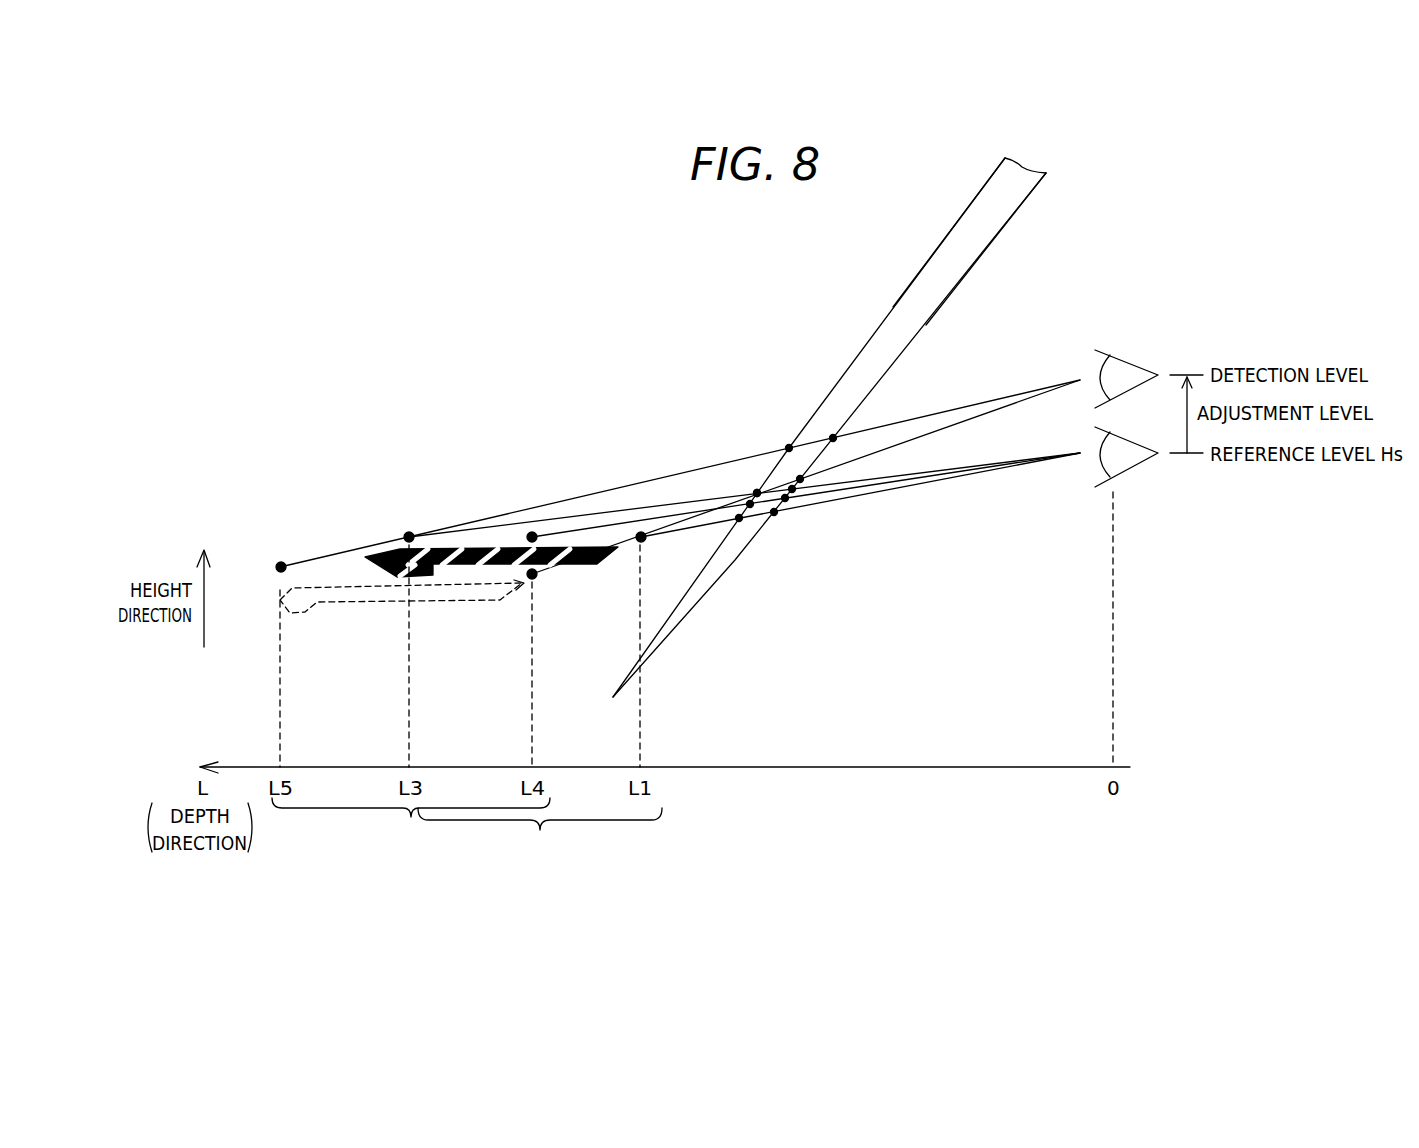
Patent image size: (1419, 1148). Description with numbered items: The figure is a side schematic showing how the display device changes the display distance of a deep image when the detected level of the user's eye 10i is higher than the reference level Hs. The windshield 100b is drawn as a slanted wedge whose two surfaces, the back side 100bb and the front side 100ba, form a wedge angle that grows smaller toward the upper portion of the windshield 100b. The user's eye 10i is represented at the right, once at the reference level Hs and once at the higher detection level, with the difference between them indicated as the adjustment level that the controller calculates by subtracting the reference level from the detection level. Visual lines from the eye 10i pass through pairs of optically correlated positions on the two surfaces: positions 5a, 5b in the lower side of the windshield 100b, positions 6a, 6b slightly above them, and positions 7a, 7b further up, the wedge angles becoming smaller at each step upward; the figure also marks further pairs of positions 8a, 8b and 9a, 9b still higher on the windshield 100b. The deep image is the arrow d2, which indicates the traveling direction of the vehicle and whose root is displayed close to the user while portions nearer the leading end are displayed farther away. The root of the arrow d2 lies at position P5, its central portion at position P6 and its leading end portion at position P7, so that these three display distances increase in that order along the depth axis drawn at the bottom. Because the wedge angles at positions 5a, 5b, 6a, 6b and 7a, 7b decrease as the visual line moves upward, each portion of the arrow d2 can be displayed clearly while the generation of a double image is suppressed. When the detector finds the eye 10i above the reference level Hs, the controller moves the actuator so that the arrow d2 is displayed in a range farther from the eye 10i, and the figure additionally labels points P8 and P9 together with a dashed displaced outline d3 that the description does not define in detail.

The windshield 100b is at (942, 231).
The back side 100bb is at (893, 307).
The front side 100ba is at (926, 325).
The intersection point on edge 100ba for point P9 9a is at (833, 438).
The intersection point on edge 100bb for point P9 9b is at (789, 448).
The intersection point on edge 100ba for point P8 8a is at (800, 479).
The intersection point on edge 100bb for point P8 8b is at (757, 493).
The position 7a is at (792, 489).
The position 7b is at (757, 493).
The position 6a is at (785, 498).
The position 6b is at (750, 504).
The position 5a is at (774, 512).
The position 5b is at (739, 518).
The eye 10i is at (1125, 354).
The position of the root of arrow d2 P5 is at (641, 537).
The position in the central portion of arrow d2 P6 is at (532, 537).
The position in the leading end portion of arrow d2 P7 is at (409, 537).
The point P8 on object P8 is at (532, 574).
The point P9 on object P9 is at (281, 567).
The arrow d2 is at (382, 562).
The displaced object outline and displacement d3 is at (278, 600).